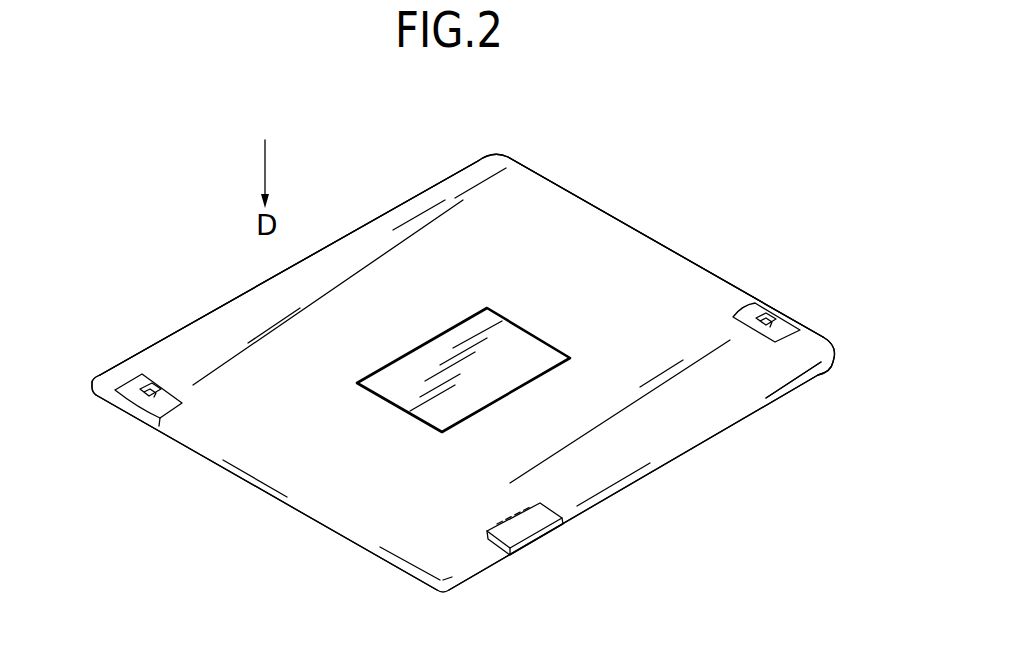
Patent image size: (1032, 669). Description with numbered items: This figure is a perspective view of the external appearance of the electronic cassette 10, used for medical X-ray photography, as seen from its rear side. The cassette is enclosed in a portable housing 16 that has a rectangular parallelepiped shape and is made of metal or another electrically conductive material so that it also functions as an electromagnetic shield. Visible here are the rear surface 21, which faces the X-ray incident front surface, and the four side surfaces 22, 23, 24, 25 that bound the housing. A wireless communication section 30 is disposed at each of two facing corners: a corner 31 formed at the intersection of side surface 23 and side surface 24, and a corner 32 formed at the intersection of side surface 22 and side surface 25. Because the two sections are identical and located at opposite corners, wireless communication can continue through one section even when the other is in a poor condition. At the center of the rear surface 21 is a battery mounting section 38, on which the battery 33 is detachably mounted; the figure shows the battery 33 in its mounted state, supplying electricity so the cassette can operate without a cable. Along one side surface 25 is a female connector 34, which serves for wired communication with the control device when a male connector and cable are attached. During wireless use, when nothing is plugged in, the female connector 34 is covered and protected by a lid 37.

The electronic cassette 10 is at (492, 144).
The housing 16 is at (684, 246).
The rear surface 21 is at (813, 375).
The side surface 22 is at (561, 186).
The side surface 23 is at (297, 508).
The side surface 24 is at (148, 347).
The side surface 25 is at (632, 482).
The wireless communication section 30 is at (145, 420).
The corner 31 is at (102, 378).
The corner 32 is at (835, 347).
The battery 33 is at (551, 359).
The female connector 34 is at (496, 515).
The lid 37 is at (535, 532).
The battery mounting section 38 is at (445, 331).